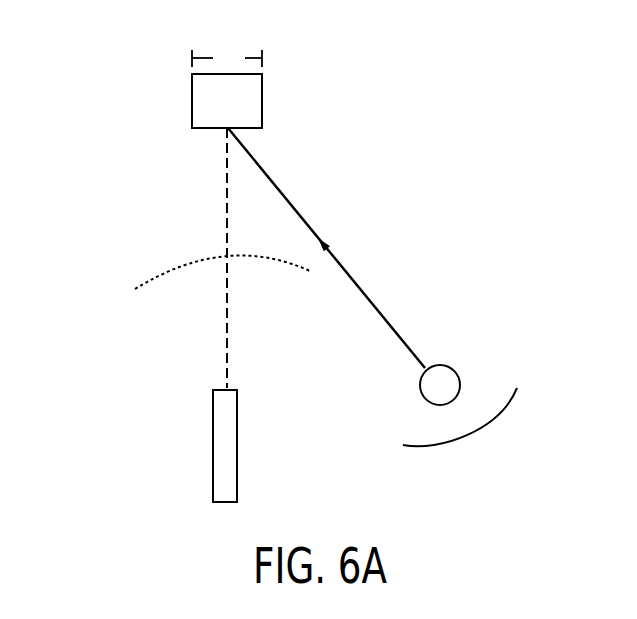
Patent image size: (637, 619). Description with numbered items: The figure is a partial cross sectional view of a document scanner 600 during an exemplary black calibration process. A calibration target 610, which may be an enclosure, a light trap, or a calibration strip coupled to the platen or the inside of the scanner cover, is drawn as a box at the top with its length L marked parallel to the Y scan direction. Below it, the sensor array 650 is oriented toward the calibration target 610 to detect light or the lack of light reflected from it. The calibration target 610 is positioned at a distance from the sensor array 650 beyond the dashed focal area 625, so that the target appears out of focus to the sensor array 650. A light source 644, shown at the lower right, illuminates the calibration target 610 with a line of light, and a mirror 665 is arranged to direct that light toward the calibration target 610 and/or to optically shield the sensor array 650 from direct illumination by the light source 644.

The scanner 600 is at (90, 68).
The calibration target 610 is at (262, 88).
The focal area 625 is at (163, 268).
The light source 644 is at (460, 383).
The sensor array 650 is at (213, 472).
The mirror 665 is at (450, 445).